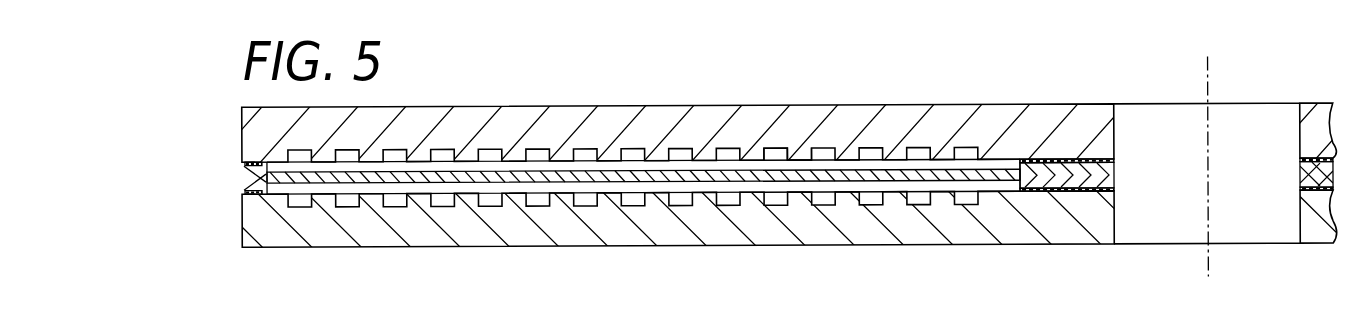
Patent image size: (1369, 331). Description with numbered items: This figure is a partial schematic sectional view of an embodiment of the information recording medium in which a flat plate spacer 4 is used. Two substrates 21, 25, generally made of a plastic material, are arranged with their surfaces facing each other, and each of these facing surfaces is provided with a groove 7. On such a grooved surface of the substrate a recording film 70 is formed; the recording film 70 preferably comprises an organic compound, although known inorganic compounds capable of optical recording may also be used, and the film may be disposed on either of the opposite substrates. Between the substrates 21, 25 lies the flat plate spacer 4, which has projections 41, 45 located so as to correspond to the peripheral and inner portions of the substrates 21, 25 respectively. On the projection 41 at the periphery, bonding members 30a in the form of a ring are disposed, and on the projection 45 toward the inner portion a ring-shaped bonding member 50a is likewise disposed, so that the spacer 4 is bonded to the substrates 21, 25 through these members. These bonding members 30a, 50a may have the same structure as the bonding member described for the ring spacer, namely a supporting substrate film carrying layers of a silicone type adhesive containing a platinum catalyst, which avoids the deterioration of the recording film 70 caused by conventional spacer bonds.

The substrate 21 is at (728, 113).
The substrate 25 is at (703, 230).
The groove 7 is at (780, 147).
The recording film 70 is at (785, 153).
The flat plate spacer 4 is at (492, 178).
The projection 45 is at (1072, 180).
The bonding member 50a is at (1077, 157).
The bonding member 30a is at (242, 163).
The projection 41 is at (248, 180).